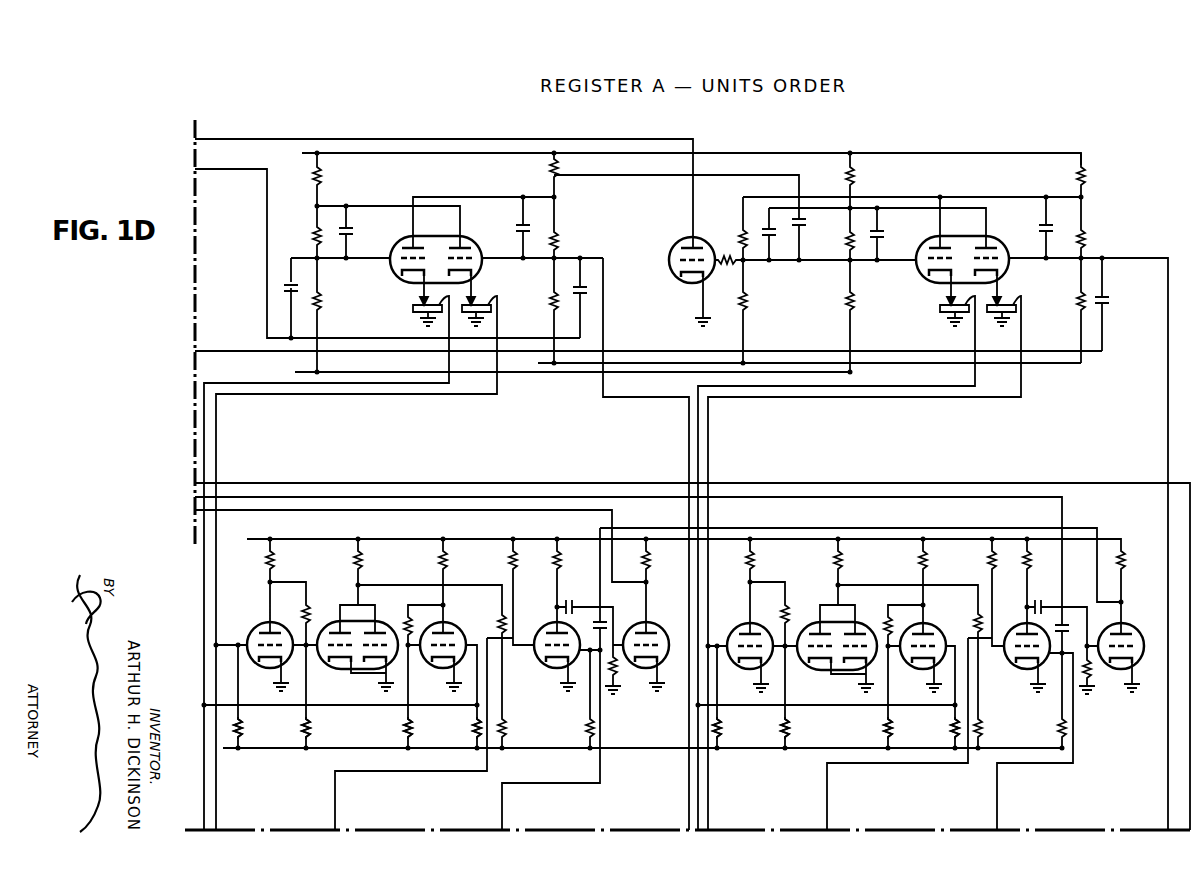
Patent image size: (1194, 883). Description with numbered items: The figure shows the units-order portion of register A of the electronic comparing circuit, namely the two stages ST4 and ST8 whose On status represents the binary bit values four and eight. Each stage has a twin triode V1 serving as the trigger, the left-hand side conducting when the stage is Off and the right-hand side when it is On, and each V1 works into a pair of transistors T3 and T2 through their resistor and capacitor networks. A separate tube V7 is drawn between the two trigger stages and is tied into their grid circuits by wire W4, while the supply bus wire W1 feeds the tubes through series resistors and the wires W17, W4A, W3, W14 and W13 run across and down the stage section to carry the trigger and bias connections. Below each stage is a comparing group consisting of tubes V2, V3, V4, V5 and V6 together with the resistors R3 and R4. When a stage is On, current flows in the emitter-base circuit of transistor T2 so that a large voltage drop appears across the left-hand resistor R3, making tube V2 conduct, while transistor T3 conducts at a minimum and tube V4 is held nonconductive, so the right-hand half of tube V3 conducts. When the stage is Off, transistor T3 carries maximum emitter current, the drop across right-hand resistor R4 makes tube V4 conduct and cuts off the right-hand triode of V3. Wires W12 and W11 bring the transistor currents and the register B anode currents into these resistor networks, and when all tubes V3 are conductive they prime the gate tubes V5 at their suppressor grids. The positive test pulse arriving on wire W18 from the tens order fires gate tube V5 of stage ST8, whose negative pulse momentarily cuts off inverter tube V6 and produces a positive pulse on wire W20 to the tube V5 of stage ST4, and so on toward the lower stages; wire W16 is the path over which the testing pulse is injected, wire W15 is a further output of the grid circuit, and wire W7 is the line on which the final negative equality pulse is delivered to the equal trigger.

The stage ST4 is at (452, 124).
The stage ST8 is at (977, 124).
The wire W17 is at (316, 139).
The wire W1 is at (790, 153).
The wire W4A is at (263, 235).
The wire W4 is at (641, 176).
The triode V1 is at (393, 243).
The tube V7 is at (676, 246).
The transistor T3 is at (412, 309).
The transistor T2 is at (492, 309).
The wire W13 is at (604, 317).
The wire W3 is at (654, 351).
The wire W14 is at (522, 374).
The wire W12 is at (206, 427).
The wire W11 is at (218, 461).
The wire W7 is at (478, 483).
The wire W18 is at (602, 497).
The wire W20 is at (613, 513).
The wire W16 is at (504, 813).
The wire W15 is at (337, 812).
The tube V2 is at (258, 625).
The tube V3 is at (350, 623).
The tube V4 is at (455, 626).
The gate tube V5 is at (546, 624).
The inverter tube V6 is at (661, 626).
The resistor R3 is at (240, 731).
The resistor R4 is at (476, 733).